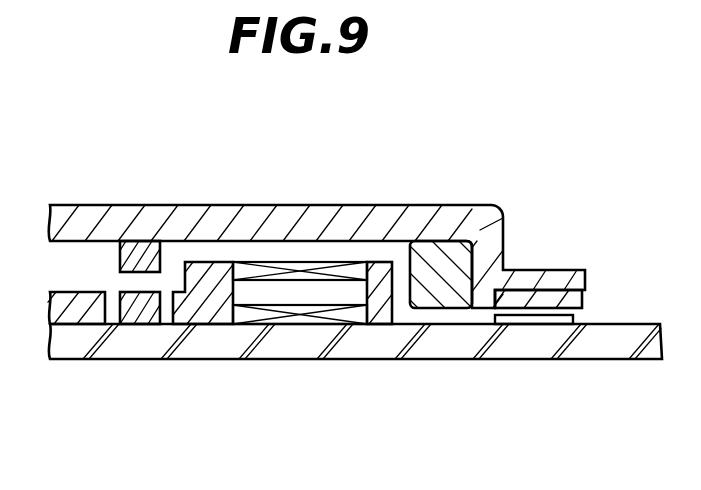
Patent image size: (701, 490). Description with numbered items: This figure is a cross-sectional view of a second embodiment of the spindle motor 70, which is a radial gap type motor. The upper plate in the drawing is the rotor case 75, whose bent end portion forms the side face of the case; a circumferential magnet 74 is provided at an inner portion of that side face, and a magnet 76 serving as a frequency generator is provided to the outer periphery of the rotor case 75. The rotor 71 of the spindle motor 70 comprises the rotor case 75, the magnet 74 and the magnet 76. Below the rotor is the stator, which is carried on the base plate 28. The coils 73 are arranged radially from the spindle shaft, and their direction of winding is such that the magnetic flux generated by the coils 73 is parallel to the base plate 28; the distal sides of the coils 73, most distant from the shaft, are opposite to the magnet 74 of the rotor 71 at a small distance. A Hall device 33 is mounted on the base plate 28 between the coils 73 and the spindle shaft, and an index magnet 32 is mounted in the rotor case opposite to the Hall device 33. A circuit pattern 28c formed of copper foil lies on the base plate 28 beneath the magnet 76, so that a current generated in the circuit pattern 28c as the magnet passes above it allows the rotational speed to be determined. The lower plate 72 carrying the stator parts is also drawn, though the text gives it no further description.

The spindle motor 70 is at (443, 97).
The rotor 71 is at (418, 196).
The lower yoke plate 72 is at (225, 373).
The coils 73 is at (303, 323).
The circumferential magnet 74 is at (455, 302).
The rotor case 75 is at (468, 205).
The magnet 76 is at (533, 308).
The index magnet 32 is at (143, 240).
The Hall device 33 is at (137, 327).
The base plate 28 is at (597, 350).
The circuit pattern 28c is at (562, 320).